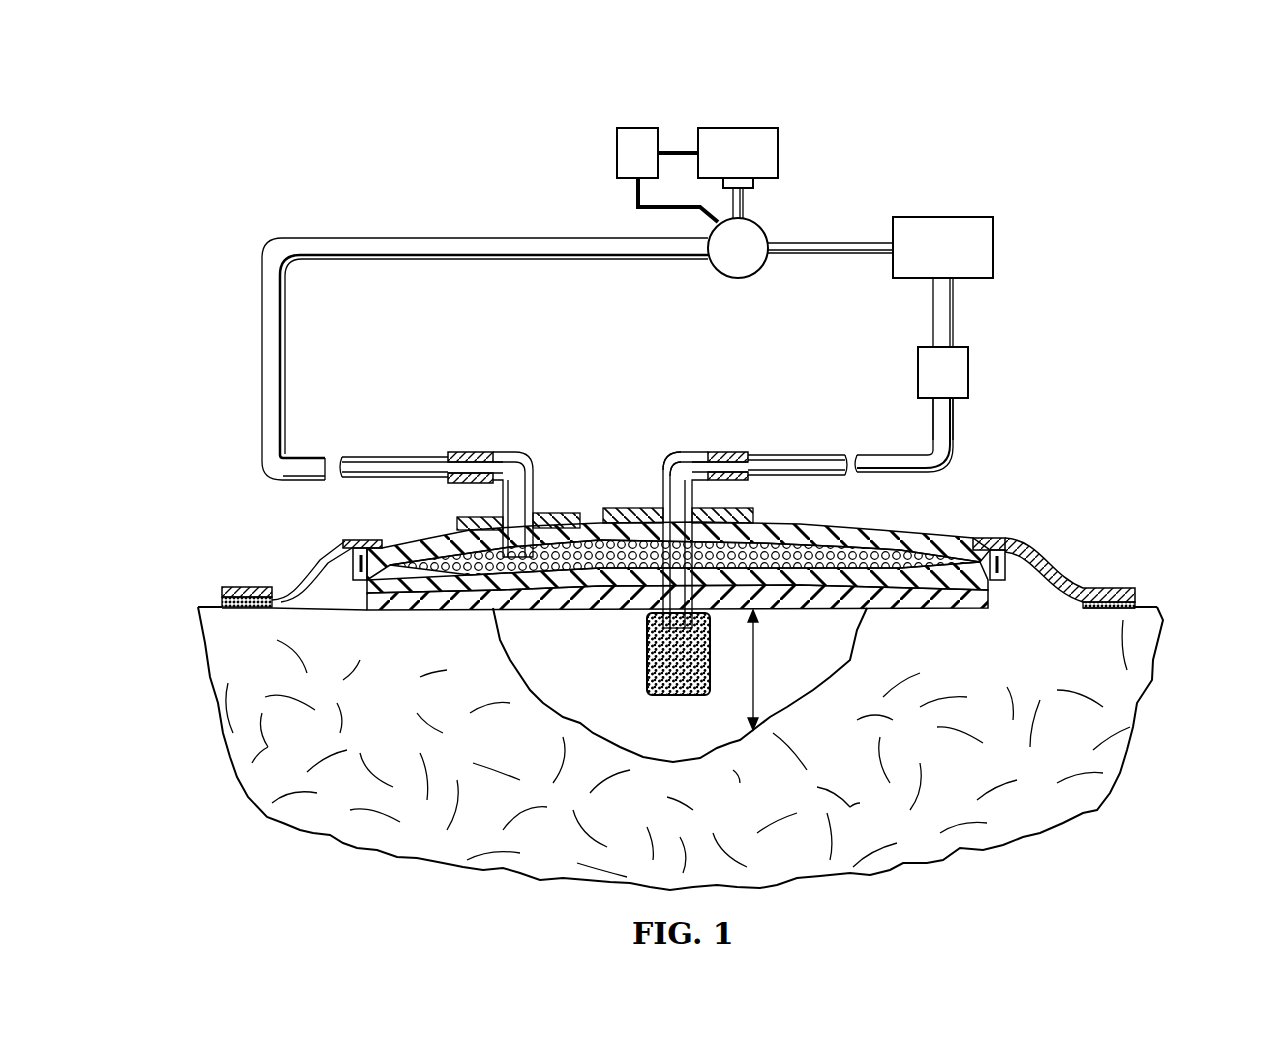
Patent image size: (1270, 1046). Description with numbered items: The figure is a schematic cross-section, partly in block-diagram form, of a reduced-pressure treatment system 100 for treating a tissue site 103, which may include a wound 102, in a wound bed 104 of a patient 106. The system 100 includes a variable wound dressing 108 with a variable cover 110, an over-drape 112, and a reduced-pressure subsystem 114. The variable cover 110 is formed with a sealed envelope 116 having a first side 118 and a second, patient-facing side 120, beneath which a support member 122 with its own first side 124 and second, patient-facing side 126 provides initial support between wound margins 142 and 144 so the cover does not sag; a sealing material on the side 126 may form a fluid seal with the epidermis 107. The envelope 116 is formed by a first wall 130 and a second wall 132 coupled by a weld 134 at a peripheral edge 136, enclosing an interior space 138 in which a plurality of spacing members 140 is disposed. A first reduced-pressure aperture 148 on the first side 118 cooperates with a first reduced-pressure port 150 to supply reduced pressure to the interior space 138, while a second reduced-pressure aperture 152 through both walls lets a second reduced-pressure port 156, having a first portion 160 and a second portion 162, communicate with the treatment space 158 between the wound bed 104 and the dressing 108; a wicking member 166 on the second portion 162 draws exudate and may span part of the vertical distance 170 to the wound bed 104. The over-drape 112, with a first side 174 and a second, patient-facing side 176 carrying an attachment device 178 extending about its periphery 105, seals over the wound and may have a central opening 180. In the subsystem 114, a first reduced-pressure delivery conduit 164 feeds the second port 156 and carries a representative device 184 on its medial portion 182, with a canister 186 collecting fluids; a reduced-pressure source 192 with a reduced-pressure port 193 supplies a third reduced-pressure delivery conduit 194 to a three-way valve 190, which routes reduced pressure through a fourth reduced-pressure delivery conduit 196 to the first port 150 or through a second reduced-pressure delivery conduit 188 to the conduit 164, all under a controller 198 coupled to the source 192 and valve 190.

The reduced-pressure treatment system 100 is at (240, 189).
The wound 102 is at (550, 716).
The tissue site 103 is at (658, 766).
The wound bed 104 is at (738, 748).
The periphery 105 is at (1118, 592).
The patient 106 is at (1160, 607).
The epidermis 107 is at (198, 604).
The variable wound dressing 108 is at (1048, 528).
The variable cover 110 is at (420, 543).
The over-drape 112 is at (240, 585).
The reduced-pressure subsystem 114 is at (1040, 234).
The sealed envelope 116 is at (948, 540).
The first side 118 is at (903, 532).
The second, patient-facing side 120 is at (398, 612).
The support member 122 is at (992, 613).
The first side 124 is at (990, 600).
The second, patient-facing side 126 is at (930, 612).
The first wall 130 is at (857, 532).
The second wall 132 is at (433, 606).
The weld 134 is at (348, 540).
The peripheral edge 136 is at (335, 608).
The interior space 138 is at (768, 540).
The spacing members 140 is at (802, 543).
The wound margin 142 is at (497, 615).
The wound margin 144 is at (870, 618).
The first reduced-pressure aperture 148 is at (528, 512).
The first reduced-pressure port 150 is at (493, 452).
The second reduced-pressure aperture 152 is at (670, 512).
The second reduced-pressure port 156 is at (658, 452).
The treatment space 158 is at (605, 680).
The first portion 160 is at (703, 452).
The second portion 162 is at (650, 614).
The first reduced-pressure delivery conduit 164 is at (953, 322).
The wicking member 166 is at (676, 697).
The distance 170 is at (757, 660).
The first side 174 is at (222, 590).
The second, patient-facing side 176 is at (1070, 612).
The attachment device 178 is at (245, 612).
The central opening 180 is at (980, 535).
The medial portion 182 is at (930, 400).
The device 184 is at (970, 375).
The canister 186 is at (959, 261).
The second reduced-pressure delivery conduit 188 is at (862, 243).
The valve 190 is at (755, 259).
The reduced-pressure source 192 is at (778, 152).
The reduced-pressure port 193 is at (757, 183).
The third reduced-pressure delivery conduit 194 is at (747, 205).
The fourth reduced-pressure delivery conduit 196 is at (262, 325).
The controller 198 is at (617, 148).